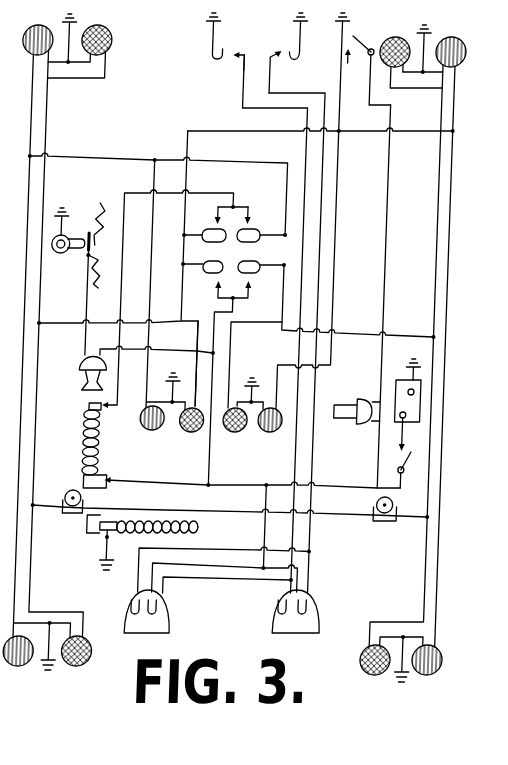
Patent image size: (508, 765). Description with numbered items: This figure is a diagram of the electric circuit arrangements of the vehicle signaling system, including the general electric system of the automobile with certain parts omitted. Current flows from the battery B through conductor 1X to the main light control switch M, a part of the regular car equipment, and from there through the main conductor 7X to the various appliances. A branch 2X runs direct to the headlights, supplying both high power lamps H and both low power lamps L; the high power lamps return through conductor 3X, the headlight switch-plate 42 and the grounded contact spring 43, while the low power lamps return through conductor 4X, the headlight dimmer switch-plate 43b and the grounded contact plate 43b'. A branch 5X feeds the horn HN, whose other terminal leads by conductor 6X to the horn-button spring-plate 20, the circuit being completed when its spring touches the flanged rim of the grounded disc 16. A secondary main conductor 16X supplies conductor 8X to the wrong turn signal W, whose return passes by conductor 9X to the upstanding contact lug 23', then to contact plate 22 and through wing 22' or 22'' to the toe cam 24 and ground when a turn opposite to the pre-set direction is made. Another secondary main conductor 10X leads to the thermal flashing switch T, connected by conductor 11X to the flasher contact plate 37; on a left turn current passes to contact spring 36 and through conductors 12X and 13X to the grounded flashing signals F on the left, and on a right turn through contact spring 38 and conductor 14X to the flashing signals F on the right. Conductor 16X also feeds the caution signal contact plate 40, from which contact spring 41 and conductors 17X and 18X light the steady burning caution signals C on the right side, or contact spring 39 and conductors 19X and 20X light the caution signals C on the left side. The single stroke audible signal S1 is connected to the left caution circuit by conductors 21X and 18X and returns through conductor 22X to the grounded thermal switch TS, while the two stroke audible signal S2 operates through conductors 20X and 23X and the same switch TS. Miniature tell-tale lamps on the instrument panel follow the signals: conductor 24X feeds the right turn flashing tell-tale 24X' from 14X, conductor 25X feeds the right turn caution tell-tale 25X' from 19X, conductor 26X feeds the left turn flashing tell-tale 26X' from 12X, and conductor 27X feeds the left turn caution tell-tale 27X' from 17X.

The conductor 1X is at (405, 445).
The branch conductor 2X is at (268, 525).
The conductor 3X is at (297, 88).
The conductor 4X is at (233, 79).
The branch conductor 5X is at (22, 148).
The conductor 6X is at (380, 370).
The main conductor 7X is at (332, 488).
The conductor 8X is at (157, 344).
The conductor 9X is at (84, 338).
The secondary main conductor 10X is at (115, 478).
The conductor 11X is at (184, 192).
The conductor 12X is at (193, 130).
The conductor 13X is at (448, 147).
The conductor 14X is at (197, 161).
The grounded disc 16 is at (351, 64).
The secondary main conductor 16X is at (213, 472).
The conductor 17X is at (40, 321).
The conductor 18X is at (39, 292).
The conductor 19X is at (279, 299).
The horn-button spring-plate 20 is at (343, 34).
The conductor 20X is at (431, 283).
The conductor 21X is at (40, 504).
The contact plate 22 is at (104, 240).
The wing 22' is at (92, 218).
The wing 22'' is at (105, 278).
The conductor 22X is at (150, 509).
The upstanding contact lug 23' is at (70, 258).
The conductor 23X is at (323, 512).
The toe cam 24 is at (61, 232).
The tell-tale control conductor 24X is at (208, 285).
The right turn flashing tell-tale signal 24X' is at (146, 426).
The tell-tale control conductor 25X is at (255, 365).
The right turn caution tell-tale signal 25X' is at (234, 428).
The left turn tell-tale control conductor 26X is at (314, 211).
The left turn flashing tell-tale signal 26X' is at (272, 428).
The caution tell-tale signal control conductor 27X is at (183, 363).
The left turn caution tell-tale signal 27X' is at (187, 427).
The contact spring 36 is at (209, 232).
The flasher contact plate 37 is at (232, 205).
The contact spring 38 is at (248, 231).
The contact spring 39 is at (247, 273).
The caution signal contact plate 40 is at (235, 300).
The contact spring 41 is at (208, 273).
The headlight switch-plate 42 is at (262, 64).
The grounded contact spring 43 is at (288, 50).
The headlight dimmer switch-plate 43b is at (252, 53).
The grounded contact plate 43b' is at (201, 36).
The battery B is at (408, 390).
The caution signals C is at (94, 26).
The flashing signals F is at (30, 27).
The high power lamps H is at (136, 607).
The horn HN is at (343, 402).
The low power lamps L is at (177, 610).
The main light control switch M is at (409, 470).
The audible signal S1 is at (66, 513).
The audible signal S2 is at (383, 522).
The thermal flashing switch T is at (83, 415).
The grounded thermal switch TS is at (203, 528).
The wrong turn signal W is at (87, 378).